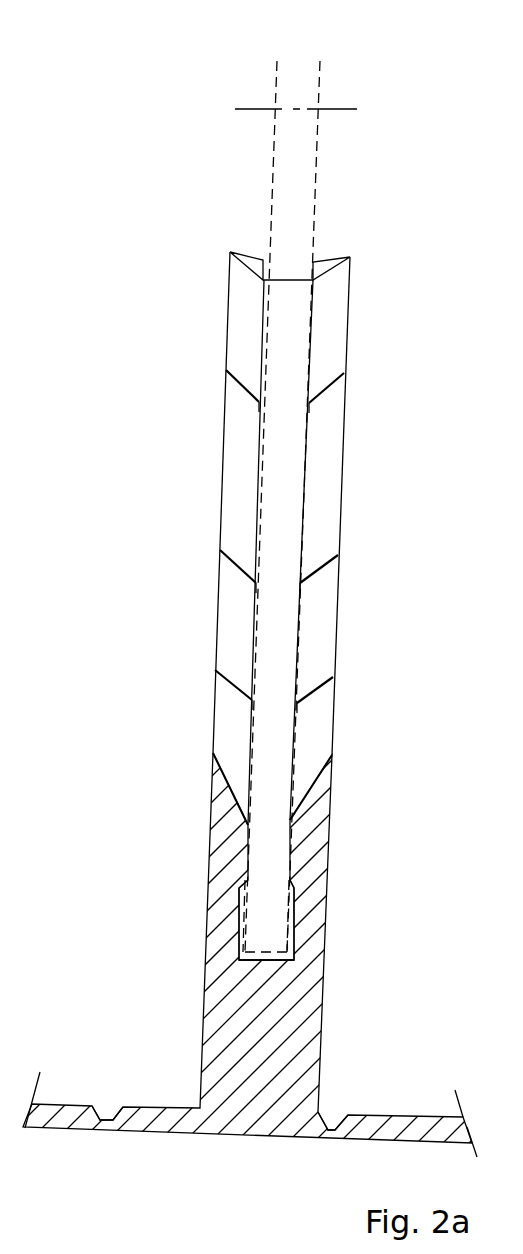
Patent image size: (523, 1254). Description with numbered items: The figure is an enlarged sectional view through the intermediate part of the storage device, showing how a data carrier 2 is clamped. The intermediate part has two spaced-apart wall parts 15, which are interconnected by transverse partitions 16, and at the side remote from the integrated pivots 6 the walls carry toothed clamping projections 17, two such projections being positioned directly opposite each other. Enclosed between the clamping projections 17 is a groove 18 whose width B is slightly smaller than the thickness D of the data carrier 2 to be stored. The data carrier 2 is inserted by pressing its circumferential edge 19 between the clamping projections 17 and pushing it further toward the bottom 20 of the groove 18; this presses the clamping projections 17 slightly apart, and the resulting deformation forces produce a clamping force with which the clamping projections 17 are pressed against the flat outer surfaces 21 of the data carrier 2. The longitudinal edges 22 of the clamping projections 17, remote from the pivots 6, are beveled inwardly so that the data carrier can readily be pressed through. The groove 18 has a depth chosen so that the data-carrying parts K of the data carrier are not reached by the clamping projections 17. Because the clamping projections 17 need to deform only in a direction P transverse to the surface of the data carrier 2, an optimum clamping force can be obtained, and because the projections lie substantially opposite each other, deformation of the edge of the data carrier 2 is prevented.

The data carrier 2 is at (295, 157).
The integrated pivots 6 is at (110, 1104).
The wall parts 15 is at (228, 727).
The transverse partitions 16 is at (253, 1012).
The clamping projections 17 is at (315, 643).
The groove 18 is at (253, 927).
The circumferential edge 19 is at (294, 899).
The bottom of the groove 20 is at (290, 950).
The flat outer surfaces 21 is at (253, 213).
The longitudinal edges 22 is at (217, 773).
The thickness of the data carrier D is at (210, 61).
The direction transverse to the data carrier surface P is at (218, 270).
The data-carrying parts K is at (306, 455).
The width of the groove B is at (289, 855).